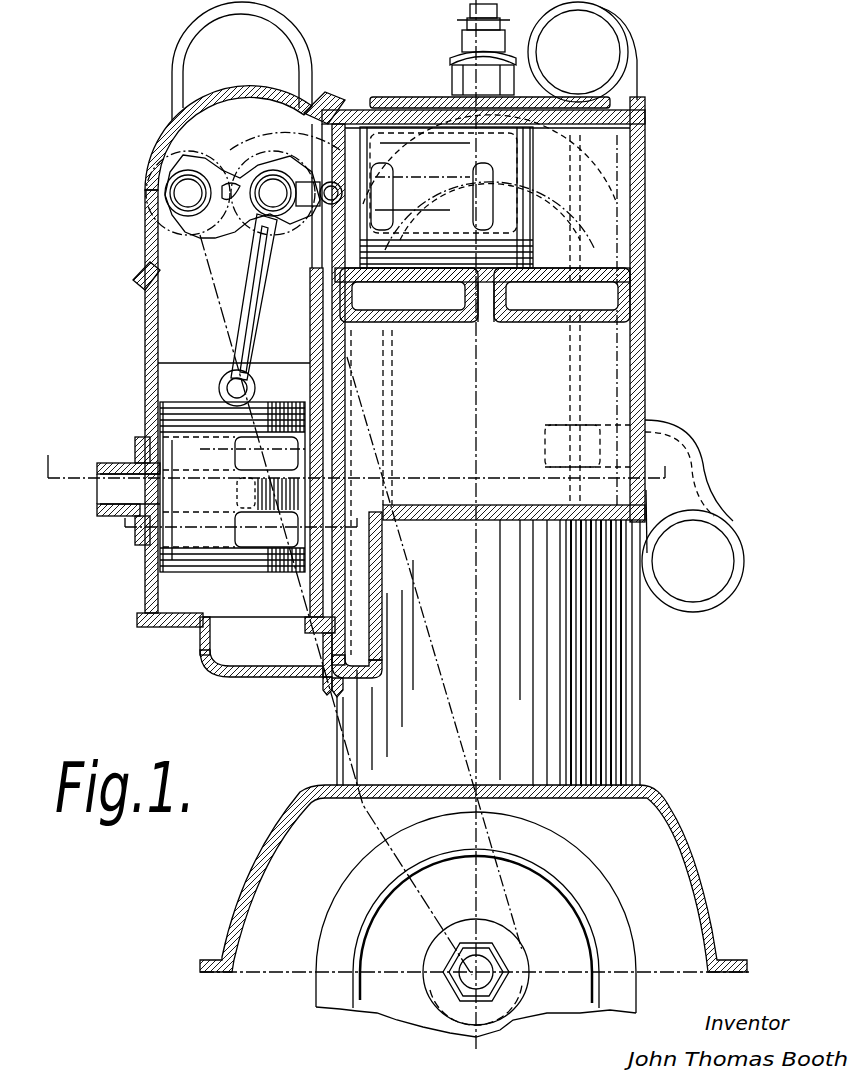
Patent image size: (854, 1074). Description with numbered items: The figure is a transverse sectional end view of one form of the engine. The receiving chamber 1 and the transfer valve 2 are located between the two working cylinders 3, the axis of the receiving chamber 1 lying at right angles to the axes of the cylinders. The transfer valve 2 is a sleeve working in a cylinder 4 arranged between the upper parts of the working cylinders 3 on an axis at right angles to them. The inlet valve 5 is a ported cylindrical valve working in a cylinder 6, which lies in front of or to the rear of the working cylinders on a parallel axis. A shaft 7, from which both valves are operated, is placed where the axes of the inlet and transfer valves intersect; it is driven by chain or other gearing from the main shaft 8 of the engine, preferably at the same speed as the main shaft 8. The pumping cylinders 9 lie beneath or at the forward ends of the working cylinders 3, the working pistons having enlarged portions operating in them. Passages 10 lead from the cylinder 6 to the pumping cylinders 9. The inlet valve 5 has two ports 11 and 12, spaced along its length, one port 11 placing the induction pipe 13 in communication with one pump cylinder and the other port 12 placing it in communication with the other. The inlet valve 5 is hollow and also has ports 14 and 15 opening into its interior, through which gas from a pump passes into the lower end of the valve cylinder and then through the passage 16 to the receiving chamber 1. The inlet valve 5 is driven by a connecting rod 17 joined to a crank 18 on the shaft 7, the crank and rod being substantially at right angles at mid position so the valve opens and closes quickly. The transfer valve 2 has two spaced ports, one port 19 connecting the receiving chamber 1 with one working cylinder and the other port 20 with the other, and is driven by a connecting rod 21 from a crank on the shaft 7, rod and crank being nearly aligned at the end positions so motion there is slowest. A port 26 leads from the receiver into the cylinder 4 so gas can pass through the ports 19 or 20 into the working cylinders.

The receiving chamber 1 is at (597, 403).
The transfer valve 2 is at (400, 265).
The working cylinders 3 is at (580, 350).
The cylinder 4 is at (597, 130).
The inlet valve 5 is at (393, 457).
The cylinder 6 is at (150, 580).
The shaft 7 is at (488, 47).
The main shaft 8 is at (440, 948).
The pumping cylinders 9 is at (590, 697).
The passages 10 is at (425, 505).
The port 11 is at (150, 427).
The port 12 is at (150, 545).
The induction pipe 13 is at (117, 498).
The port 14 is at (275, 395).
The port 15 is at (272, 573).
The passage 16 is at (357, 640).
The connecting rod 17 is at (280, 140).
The crank 18 is at (192, 233).
The port 19 is at (420, 200).
The port 20 is at (443, 183).
The connecting rod 21 is at (338, 185).
The port 26 is at (483, 313).